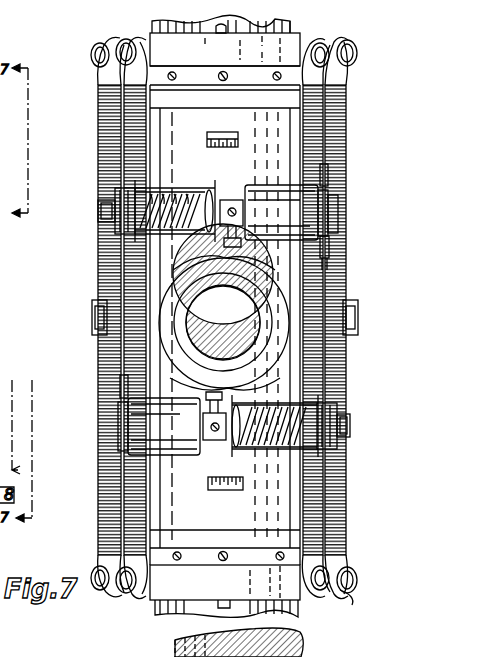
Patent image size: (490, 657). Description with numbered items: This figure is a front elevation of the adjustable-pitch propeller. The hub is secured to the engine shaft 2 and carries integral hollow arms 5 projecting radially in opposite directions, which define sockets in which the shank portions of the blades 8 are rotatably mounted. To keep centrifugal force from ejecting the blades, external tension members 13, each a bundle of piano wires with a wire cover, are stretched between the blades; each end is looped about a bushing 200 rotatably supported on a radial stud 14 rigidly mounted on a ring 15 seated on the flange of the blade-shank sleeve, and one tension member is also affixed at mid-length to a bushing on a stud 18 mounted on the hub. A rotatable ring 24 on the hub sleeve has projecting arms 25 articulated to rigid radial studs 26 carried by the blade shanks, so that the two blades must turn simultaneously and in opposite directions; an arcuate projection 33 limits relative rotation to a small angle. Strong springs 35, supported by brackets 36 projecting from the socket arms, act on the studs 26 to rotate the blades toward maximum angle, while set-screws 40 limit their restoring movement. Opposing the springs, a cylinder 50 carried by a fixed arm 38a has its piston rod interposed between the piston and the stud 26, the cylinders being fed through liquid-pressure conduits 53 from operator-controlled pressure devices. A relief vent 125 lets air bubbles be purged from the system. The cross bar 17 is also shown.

The shaft 2 is at (302, 642).
The hollow arms 5 is at (225, 325).
The blades 8 is at (290, 26).
The external tension members 13 is at (110, 140).
The radial stud 14 is at (96, 57).
The ring 15 is at (225, 59).
The lower cross bar 17 is at (225, 576).
The stud 18 is at (93, 312).
The rotatable ring 24 is at (186, 371).
The projecting arms 25 is at (226, 243).
The radial studs 26 is at (230, 200).
The arcuate projection 33 is at (272, 447).
The springs 35 is at (182, 196).
The brackets 36 is at (108, 245).
The fixed arm 38a is at (338, 188).
The set-screws 40 is at (176, 242).
The cylinder 50 is at (223, 320).
The liquid-pressure conduits 53 is at (332, 250).
The relief vent 125 is at (340, 207).
The bushing 200 is at (342, 606).